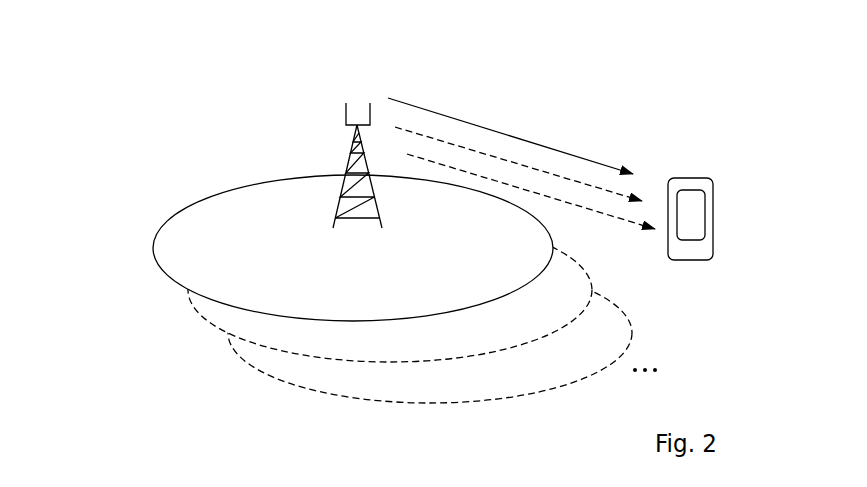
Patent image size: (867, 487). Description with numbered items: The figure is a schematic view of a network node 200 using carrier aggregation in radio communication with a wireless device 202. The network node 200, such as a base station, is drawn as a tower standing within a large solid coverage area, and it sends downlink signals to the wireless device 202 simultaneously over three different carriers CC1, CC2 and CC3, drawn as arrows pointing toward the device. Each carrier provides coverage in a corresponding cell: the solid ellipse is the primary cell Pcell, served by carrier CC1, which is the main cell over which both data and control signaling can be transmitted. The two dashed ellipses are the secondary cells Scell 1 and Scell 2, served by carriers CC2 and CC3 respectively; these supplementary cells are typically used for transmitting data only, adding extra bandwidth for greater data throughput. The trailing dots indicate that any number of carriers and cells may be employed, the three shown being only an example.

The network node 200 is at (348, 158).
The wireless device 202 is at (700, 178).
The component carrier CC1 is at (434, 111).
The component carrier CC2 is at (488, 153).
The component carrier CC3 is at (550, 198).
The primary cell Pcell is at (156, 260).
The secondary cell Scell 1 is at (202, 317).
The secondary cell Scell 2 is at (240, 362).